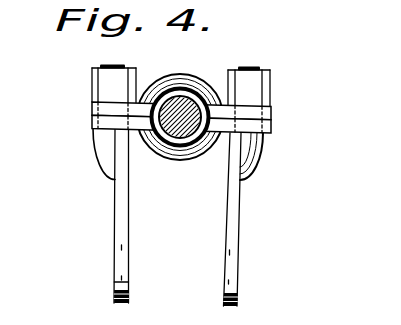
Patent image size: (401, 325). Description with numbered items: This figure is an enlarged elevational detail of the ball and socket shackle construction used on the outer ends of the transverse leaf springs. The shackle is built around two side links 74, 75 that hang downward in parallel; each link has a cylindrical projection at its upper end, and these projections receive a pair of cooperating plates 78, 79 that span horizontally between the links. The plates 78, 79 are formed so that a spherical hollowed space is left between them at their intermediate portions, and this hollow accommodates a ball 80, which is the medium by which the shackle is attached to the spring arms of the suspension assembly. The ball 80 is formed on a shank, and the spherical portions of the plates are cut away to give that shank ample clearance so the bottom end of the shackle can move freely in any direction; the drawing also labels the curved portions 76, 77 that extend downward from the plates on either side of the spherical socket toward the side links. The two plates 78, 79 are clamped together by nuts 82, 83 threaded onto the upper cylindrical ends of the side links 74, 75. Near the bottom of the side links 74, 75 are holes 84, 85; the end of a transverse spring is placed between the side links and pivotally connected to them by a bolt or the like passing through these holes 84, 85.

The side link 74 is at (114, 213).
The side link 75 is at (242, 211).
The left arm 76 is at (107, 147).
The right arm 77 is at (248, 145).
The plate 78 is at (92, 121).
The plate 79 is at (92, 107).
The ball 80 is at (187, 91).
The nut 82 is at (108, 88).
The nut 83 is at (263, 89).
The hole 84 is at (119, 273).
The hole 85 is at (230, 268).